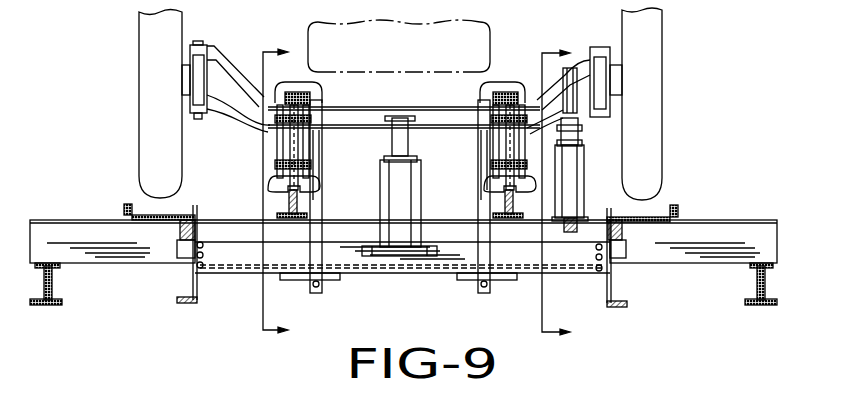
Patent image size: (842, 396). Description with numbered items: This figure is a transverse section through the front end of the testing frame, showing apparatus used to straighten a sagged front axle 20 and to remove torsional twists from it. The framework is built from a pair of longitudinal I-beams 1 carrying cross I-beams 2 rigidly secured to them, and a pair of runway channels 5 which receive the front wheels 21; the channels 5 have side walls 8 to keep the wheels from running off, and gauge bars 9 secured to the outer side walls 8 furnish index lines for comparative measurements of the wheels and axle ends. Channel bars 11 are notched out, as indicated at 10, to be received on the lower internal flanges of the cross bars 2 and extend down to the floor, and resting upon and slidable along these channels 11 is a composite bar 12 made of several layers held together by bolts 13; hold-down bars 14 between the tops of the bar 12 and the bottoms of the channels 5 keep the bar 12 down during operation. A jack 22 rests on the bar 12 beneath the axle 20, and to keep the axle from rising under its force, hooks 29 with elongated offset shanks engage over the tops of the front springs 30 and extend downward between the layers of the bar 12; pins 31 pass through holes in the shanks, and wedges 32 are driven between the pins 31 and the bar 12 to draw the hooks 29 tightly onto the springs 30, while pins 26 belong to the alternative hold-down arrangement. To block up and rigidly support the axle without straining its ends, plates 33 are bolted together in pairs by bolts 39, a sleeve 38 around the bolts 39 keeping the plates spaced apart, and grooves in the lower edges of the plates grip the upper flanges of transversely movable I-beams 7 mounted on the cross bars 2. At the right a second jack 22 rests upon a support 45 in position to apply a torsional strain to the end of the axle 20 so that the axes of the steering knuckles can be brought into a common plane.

The I-beams 1 is at (40, 287).
The cross I-beams 2 is at (33, 238).
The channels 5 is at (178, 219).
The I-beams 7 is at (288, 206).
The side walls 8 is at (607, 202).
The gauge bars 9 is at (122, 206).
The notches 10 is at (289, 190).
The channel bars 11 is at (198, 297).
The composite bar 12 is at (403, 270).
The bolts 13 is at (203, 264).
The hold-down bars 14 is at (181, 235).
The front axle 20 is at (397, 117).
The front wheels 21 is at (157, 93).
The jack 22 is at (405, 186).
The pins 26 is at (655, 120).
The hooks 29 is at (322, 137).
The front springs 30 is at (310, 97).
The pins 31 is at (320, 285).
The wedges 32 is at (287, 280).
The plates 33 is at (278, 140).
The sleeve 38 is at (278, 173).
The bolts 39 is at (286, 161).
The support 45 is at (569, 232).